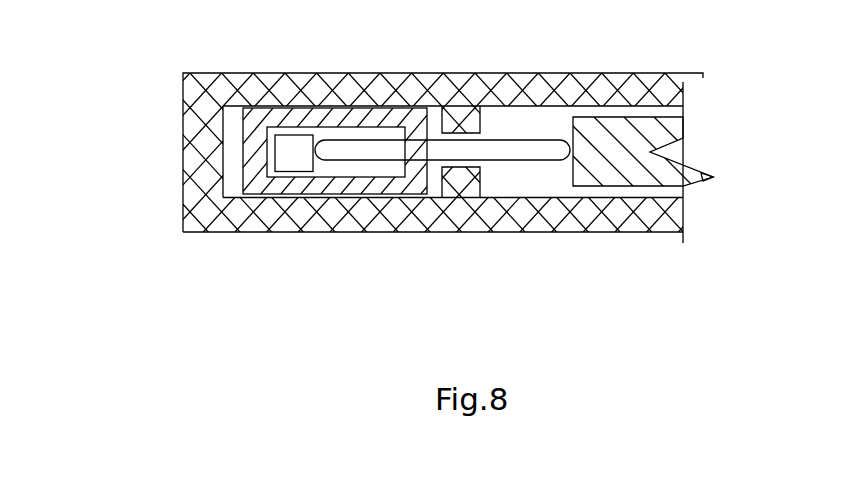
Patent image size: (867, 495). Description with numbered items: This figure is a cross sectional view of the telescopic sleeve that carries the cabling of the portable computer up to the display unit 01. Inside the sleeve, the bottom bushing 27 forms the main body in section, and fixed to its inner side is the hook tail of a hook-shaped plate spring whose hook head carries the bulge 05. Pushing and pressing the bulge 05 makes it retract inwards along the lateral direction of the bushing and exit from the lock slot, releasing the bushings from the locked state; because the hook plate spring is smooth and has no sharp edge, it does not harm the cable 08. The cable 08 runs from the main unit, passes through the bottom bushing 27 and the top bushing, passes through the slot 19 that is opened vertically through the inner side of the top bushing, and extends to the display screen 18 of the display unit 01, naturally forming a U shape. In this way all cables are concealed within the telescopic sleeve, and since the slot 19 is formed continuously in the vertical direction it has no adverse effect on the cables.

The display unit 01 is at (492, 215).
The bulge 05 is at (275, 140).
The cable 08 is at (331, 155).
The display screen 18 is at (628, 150).
The slot 19 is at (443, 180).
The bottom bushing 27 is at (242, 160).